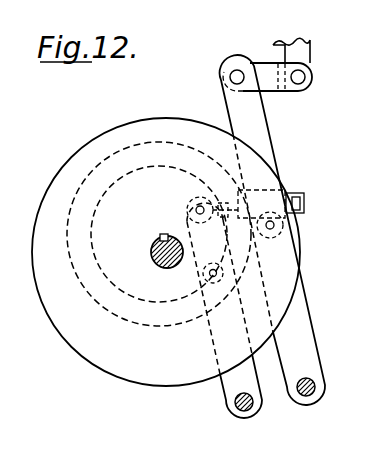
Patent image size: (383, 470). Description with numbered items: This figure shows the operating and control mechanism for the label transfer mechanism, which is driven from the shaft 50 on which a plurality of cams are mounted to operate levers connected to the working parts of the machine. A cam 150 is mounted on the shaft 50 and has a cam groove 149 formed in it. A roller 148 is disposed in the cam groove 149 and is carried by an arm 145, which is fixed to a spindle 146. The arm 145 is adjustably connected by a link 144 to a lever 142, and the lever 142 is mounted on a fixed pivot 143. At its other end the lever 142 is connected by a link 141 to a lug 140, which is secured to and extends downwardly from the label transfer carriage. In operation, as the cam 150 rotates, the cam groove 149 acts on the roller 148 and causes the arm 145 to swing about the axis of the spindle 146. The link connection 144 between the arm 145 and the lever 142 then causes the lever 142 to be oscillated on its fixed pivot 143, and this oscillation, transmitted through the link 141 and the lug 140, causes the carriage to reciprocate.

The shaft 50 is at (152, 243).
The lug 140 is at (278, 41).
The link 141 is at (270, 90).
The lever 142 is at (273, 135).
The fixed pivot 143 is at (303, 397).
The link 144 is at (183, 149).
The arm 145 is at (222, 388).
The spindle 146 is at (238, 408).
The roller 148 is at (201, 275).
The cam groove 149 is at (162, 323).
The cam 150 is at (67, 342).